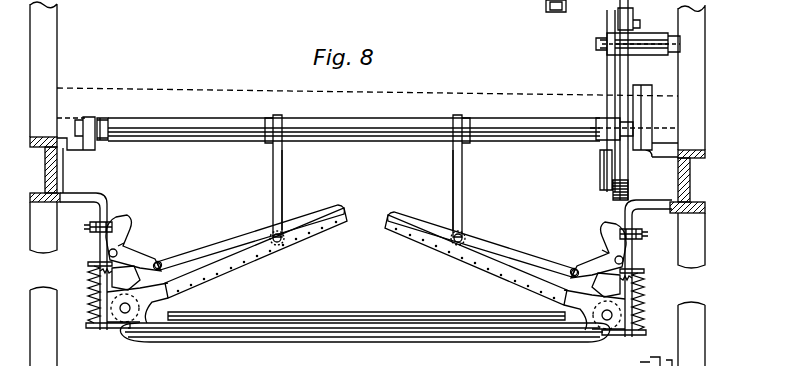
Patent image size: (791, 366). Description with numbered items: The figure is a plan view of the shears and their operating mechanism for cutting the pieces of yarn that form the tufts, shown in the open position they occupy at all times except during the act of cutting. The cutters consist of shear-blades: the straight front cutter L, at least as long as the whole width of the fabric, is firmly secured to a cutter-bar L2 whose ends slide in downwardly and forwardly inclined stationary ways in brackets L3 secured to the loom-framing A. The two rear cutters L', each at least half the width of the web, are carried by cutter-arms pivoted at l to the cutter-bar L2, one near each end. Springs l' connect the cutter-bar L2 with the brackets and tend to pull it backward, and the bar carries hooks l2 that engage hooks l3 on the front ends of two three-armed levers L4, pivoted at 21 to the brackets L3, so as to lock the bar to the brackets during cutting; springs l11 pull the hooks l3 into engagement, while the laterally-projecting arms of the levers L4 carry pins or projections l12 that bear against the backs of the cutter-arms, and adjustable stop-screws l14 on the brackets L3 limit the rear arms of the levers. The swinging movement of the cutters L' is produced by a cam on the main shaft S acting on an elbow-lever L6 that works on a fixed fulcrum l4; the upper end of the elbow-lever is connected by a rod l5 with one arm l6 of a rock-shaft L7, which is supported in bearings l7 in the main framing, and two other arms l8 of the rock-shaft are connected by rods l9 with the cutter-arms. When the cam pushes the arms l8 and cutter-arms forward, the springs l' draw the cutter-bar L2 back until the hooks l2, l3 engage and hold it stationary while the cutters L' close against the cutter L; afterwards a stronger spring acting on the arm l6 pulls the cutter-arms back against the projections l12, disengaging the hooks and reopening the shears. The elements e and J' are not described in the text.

The loom-framing A is at (367, 184).
The main shaft S is at (253, 91).
The rock-shaft L7 is at (345, 132).
The bearings l7 is at (108, 110).
The arms of rock-shaft l8 is at (271, 117).
The rods l9 is at (290, 178).
The rear cutters L' is at (366, 256).
The pins or projections l12 is at (160, 262).
The front cutter L is at (366, 308).
The cutter-bar L2 is at (364, 344).
The brackets L3 is at (100, 246).
The adjustable stop-screws l14 is at (89, 228).
The springs l11 is at (89, 264).
The springs l' is at (362, 298).
The hooks l2 is at (92, 285).
The three-armed levers L4 is at (366, 246).
The pivot 21 is at (126, 248).
The hooks l3 is at (366, 281).
The pivots l is at (366, 306).
The elbow-lever L6 is at (607, 84).
The rod l5 is at (630, 170).
The arm of rock-shaft l6 is at (602, 170).
The fixed fulcrum l4 is at (596, 44).
The block e is at (586, 15).
The bracket J' is at (656, 354).